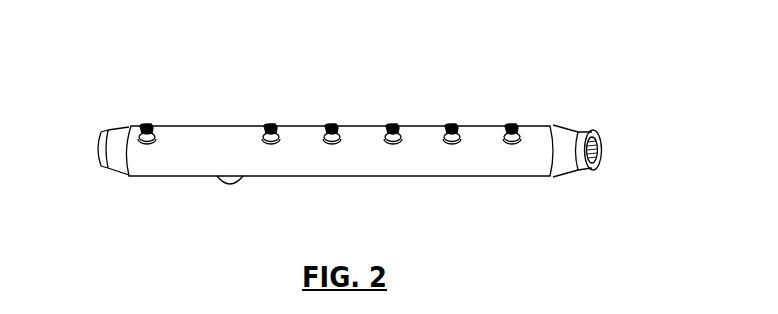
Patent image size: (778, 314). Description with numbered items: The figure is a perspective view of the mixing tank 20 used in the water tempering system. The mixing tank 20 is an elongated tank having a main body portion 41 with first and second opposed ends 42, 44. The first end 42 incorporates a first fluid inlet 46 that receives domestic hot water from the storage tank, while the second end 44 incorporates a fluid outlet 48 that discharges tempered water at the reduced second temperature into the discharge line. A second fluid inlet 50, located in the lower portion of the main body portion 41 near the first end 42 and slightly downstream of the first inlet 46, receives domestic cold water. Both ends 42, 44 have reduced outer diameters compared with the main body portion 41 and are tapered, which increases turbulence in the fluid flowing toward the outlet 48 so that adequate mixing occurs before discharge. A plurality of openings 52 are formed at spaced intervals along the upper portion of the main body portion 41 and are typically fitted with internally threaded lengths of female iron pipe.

The mixing tank 20 is at (365, 136).
The main body portion 41 is at (393, 177).
The first end 42 is at (104, 131).
The second end 44 is at (581, 171).
The first fluid inlet 46 is at (99, 157).
The fluid outlet 48 is at (602, 150).
The second fluid inlet 50 is at (232, 182).
The plurality of openings 52 is at (147, 127).